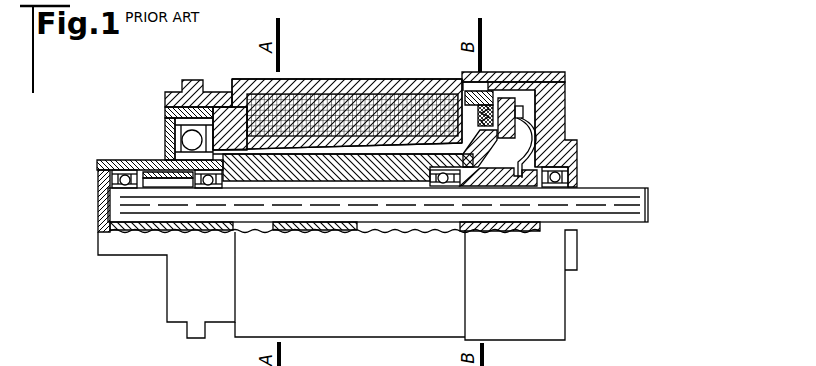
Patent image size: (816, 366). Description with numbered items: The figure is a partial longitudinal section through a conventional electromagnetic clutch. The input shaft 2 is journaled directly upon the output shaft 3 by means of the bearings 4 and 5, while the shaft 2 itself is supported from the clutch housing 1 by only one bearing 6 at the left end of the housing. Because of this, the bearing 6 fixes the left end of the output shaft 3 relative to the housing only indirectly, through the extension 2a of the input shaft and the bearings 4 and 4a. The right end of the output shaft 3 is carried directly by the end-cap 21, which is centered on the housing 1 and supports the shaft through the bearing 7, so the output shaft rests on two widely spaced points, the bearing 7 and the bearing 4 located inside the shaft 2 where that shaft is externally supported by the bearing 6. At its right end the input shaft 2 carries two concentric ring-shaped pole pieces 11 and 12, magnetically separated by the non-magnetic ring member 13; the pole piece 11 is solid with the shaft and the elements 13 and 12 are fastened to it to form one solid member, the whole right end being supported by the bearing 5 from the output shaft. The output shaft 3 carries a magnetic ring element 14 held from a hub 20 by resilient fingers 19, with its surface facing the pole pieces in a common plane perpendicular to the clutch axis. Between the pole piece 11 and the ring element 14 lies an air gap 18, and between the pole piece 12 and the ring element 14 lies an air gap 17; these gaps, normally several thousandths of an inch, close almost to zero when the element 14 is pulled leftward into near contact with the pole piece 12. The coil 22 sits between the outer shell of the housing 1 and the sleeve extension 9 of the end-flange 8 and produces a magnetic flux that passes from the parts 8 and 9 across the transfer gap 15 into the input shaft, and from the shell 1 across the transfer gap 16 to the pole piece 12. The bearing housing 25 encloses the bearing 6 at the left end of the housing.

The clutch housing 1 is at (312, 87).
The input shaft 2 is at (290, 162).
The extension of the shaft 2 2a is at (148, 163).
The output shaft 3 is at (322, 203).
The bearing 4 is at (218, 181).
The bearing 4a is at (120, 173).
The bearing 5 is at (455, 179).
The bearing 6 is at (190, 128).
The bearing 7 is at (573, 168).
The end-flange 8 is at (231, 121).
The sleeve extension 9 is at (288, 147).
The pole piece 11 is at (485, 133).
The pole piece 12 is at (506, 103).
The ring member 13 is at (478, 117).
The ring element 14 is at (553, 109).
The transfer gap 15 is at (272, 155).
The transfer gap 16 is at (483, 85).
The air gap 17 is at (560, 74).
The air gap 18 is at (525, 131).
The resilient fingers 19 is at (527, 137).
The hub 20 is at (510, 190).
The end-cap 21 is at (548, 105).
The coil 22 is at (353, 112).
The bearing housing 25 is at (181, 112).